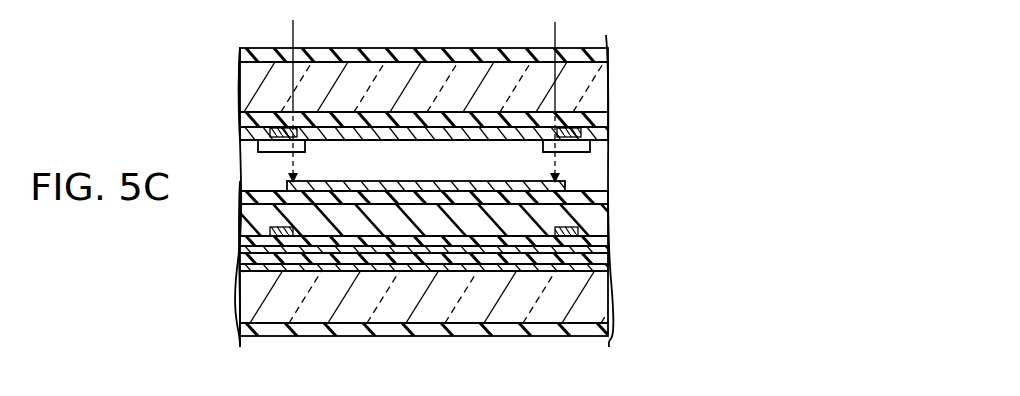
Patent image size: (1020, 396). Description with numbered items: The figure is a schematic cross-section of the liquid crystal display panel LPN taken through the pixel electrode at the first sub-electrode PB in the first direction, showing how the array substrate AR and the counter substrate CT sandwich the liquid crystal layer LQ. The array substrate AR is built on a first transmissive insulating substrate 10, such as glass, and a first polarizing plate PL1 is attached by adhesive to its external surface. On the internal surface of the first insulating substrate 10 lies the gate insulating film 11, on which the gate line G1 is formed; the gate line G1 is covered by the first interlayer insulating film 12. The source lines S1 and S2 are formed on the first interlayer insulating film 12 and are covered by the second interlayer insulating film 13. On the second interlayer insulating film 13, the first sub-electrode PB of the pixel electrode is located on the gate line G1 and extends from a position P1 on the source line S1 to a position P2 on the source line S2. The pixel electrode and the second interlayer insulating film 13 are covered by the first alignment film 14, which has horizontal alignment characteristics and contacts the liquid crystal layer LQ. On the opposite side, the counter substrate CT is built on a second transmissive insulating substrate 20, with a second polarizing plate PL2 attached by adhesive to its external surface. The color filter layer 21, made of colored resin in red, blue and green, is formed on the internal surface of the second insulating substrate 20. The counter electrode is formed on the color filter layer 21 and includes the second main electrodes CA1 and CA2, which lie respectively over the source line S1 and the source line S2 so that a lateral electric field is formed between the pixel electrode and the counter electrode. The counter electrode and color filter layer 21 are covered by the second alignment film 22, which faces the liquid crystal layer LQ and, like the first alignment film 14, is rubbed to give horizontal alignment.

The liquid crystal display panel LPN is at (712, 78).
The counter substrate CT is at (232, 88).
The array substrate AR is at (232, 299).
The second polarizing plate PL2 is at (610, 57).
The second insulating substrate 20 is at (611, 92).
The color filter layer 21 is at (611, 119).
The second alignment film 22 is at (611, 140).
The second main electrode CA1 is at (281, 128).
The second main electrode CA2 is at (566, 128).
The position P1 is at (292, 91).
The position P2 is at (554, 91).
The liquid crystal layer LQ is at (611, 170).
The first sub-electrode PB is at (423, 204).
The first alignment film 14 is at (612, 200).
The second interlayer insulating film 13 is at (612, 223).
The source line S1 is at (280, 237).
The source line S2 is at (567, 237).
The first interlayer insulating film 12 is at (612, 247).
The gate line G1 is at (612, 257).
The gate insulating film 11 is at (612, 267).
The first insulating substrate 10 is at (612, 303).
The first polarizing plate PL1 is at (611, 330).